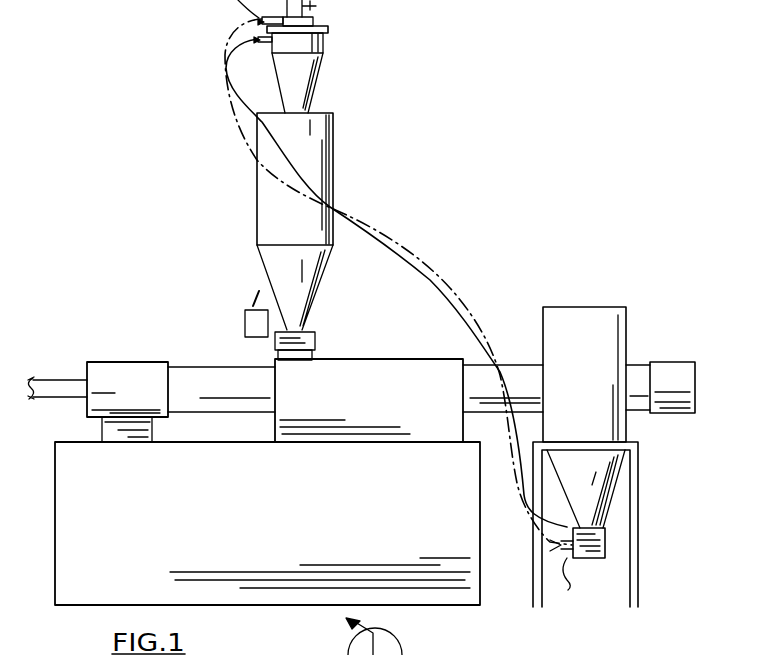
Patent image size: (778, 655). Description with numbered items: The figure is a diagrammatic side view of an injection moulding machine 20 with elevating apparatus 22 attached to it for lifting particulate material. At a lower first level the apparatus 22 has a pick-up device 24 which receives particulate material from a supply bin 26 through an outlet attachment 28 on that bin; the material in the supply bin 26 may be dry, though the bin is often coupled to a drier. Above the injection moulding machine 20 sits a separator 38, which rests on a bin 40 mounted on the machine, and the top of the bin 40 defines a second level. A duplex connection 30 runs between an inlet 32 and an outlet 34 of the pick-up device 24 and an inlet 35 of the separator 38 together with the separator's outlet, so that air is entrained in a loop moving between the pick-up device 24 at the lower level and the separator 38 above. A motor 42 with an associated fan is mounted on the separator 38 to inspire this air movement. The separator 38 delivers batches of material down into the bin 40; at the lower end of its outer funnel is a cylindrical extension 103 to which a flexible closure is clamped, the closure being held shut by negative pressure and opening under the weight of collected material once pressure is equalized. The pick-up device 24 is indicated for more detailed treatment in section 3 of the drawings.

The injection moulding machine 20 is at (108, 330).
The elevating apparatus 22 is at (378, 180).
The pick-up device 24 is at (568, 585).
The supply bin 26 is at (615, 340).
The outlet attachment 28 is at (605, 537).
The duplex connection 30 is at (456, 296).
The inlet 32 is at (577, 523).
The outlet 34 is at (557, 548).
The inlet 35 is at (226, 58).
The separator 38 is at (332, 55).
The bin 40 is at (318, 157).
The motor 42 is at (432, 654).
The cylindrical extension 103 is at (258, 290).
The section indicator 3 is at (351, 636).